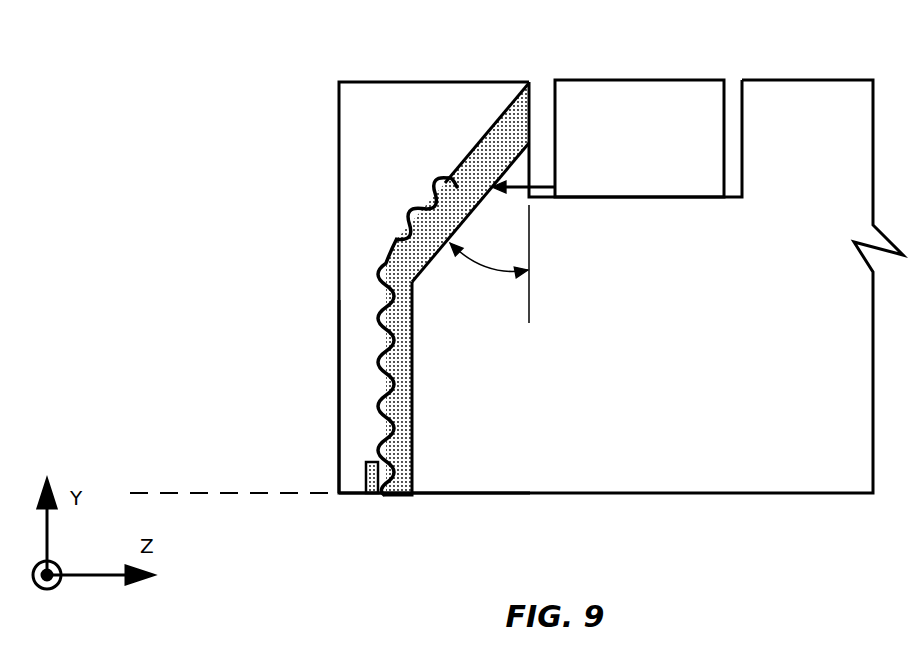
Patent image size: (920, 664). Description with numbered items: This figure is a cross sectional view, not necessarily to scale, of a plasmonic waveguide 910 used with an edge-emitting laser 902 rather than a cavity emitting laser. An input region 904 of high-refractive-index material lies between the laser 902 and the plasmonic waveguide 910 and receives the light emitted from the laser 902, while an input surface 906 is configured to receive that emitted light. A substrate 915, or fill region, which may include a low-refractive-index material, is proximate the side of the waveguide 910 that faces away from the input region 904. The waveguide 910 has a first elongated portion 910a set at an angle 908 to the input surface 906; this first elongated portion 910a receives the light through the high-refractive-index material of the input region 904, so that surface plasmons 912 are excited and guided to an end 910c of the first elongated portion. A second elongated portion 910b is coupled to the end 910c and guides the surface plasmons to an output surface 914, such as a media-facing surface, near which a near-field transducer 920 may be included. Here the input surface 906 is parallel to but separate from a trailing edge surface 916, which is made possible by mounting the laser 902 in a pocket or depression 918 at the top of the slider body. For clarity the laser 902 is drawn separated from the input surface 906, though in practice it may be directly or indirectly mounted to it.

The edge-emitting laser 902 is at (613, 79).
The input region 904 is at (520, 167).
The input surface 906 is at (528, 157).
The angle 908 is at (483, 267).
The plasmonic waveguide 910 is at (402, 289).
The first elongated portion 910a is at (487, 133).
The second elongated portion 910b is at (407, 423).
The end of the first elongated portion 910c is at (397, 255).
The surface plasmons 912 is at (380, 287).
The output surface 914 is at (347, 493).
The substrate 915 is at (365, 107).
The trailing edge surface 916 is at (339, 453).
The pocket/depression 918 is at (737, 110).
The near-field transducer 920 is at (370, 495).